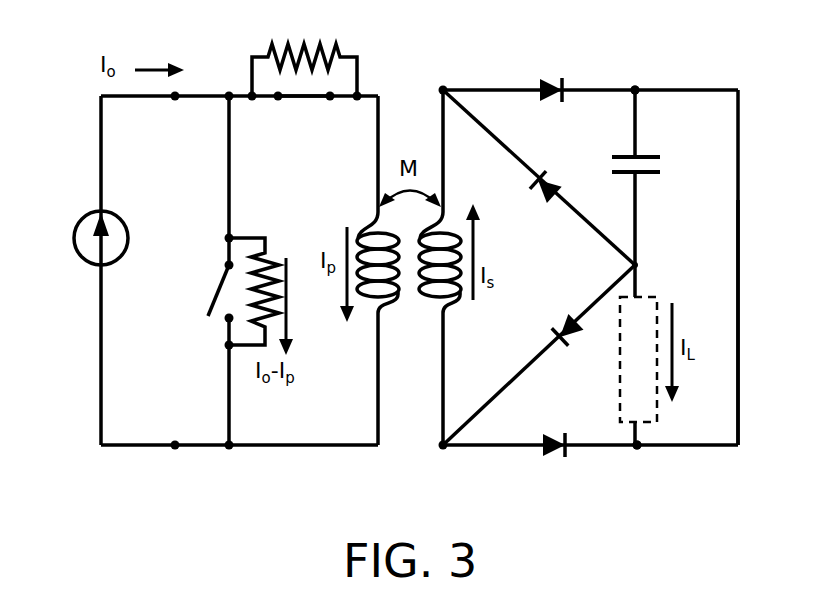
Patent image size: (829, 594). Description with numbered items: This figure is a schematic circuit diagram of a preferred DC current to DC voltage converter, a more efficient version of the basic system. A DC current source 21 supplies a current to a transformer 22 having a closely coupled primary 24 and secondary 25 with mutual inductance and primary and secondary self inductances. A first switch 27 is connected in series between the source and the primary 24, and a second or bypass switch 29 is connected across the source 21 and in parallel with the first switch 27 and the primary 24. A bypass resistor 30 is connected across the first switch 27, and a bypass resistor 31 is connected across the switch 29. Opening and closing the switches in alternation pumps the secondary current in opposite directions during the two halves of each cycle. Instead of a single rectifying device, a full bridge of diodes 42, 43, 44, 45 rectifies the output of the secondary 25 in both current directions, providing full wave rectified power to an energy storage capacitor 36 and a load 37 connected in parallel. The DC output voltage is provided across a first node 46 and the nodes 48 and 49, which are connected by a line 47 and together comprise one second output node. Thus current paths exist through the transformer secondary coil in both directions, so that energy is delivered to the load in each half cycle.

The DC current source 21 is at (72, 233).
The transformer 22 is at (447, 210).
The primary 24 is at (376, 308).
The secondary 25 is at (448, 303).
The first switch 27 is at (318, 99).
The second or bypass switch 29 is at (208, 300).
The bypass resistor 30 is at (278, 55).
The bypass resistor 31 is at (268, 262).
The energy storage capacitor 36 is at (658, 150).
The load 37 is at (650, 297).
The diode 42 is at (543, 80).
The diode 43 is at (556, 182).
The diode 44 is at (567, 316).
The diode 45 is at (552, 456).
The first node 46 is at (637, 265).
The line 47 is at (745, 287).
The node 48 is at (637, 88).
The node 49 is at (640, 447).